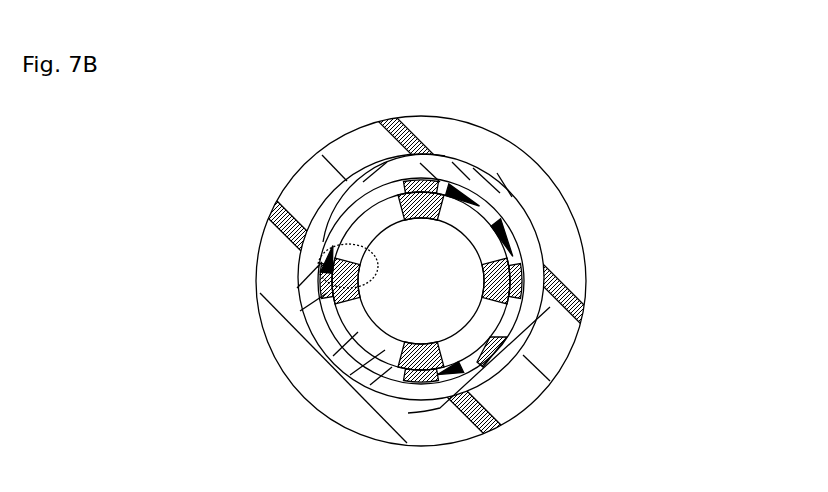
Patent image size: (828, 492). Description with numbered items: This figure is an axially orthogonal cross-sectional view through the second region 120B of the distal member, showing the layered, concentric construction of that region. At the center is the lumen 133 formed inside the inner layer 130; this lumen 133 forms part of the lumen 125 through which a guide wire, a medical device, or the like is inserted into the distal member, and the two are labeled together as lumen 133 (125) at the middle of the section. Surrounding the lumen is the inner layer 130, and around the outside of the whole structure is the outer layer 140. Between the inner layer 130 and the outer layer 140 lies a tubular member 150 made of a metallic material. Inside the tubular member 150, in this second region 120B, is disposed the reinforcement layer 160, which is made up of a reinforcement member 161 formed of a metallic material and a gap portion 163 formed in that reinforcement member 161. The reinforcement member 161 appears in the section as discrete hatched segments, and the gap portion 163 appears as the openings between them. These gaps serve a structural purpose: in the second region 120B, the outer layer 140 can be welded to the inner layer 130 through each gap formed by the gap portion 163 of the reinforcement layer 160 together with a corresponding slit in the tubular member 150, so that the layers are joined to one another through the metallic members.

The second region 120B is at (242, 144).
The outer layer 140 is at (528, 157).
The tubular member 150 is at (525, 198).
The inner layer 130 is at (548, 322).
The reinforcement layer 160 is at (520, 281).
The reinforcement member 161 is at (523, 274).
The gap portion 163 is at (522, 262).
The lumen 133 is at (249, 266).
The lumen 125 is at (318, 250).